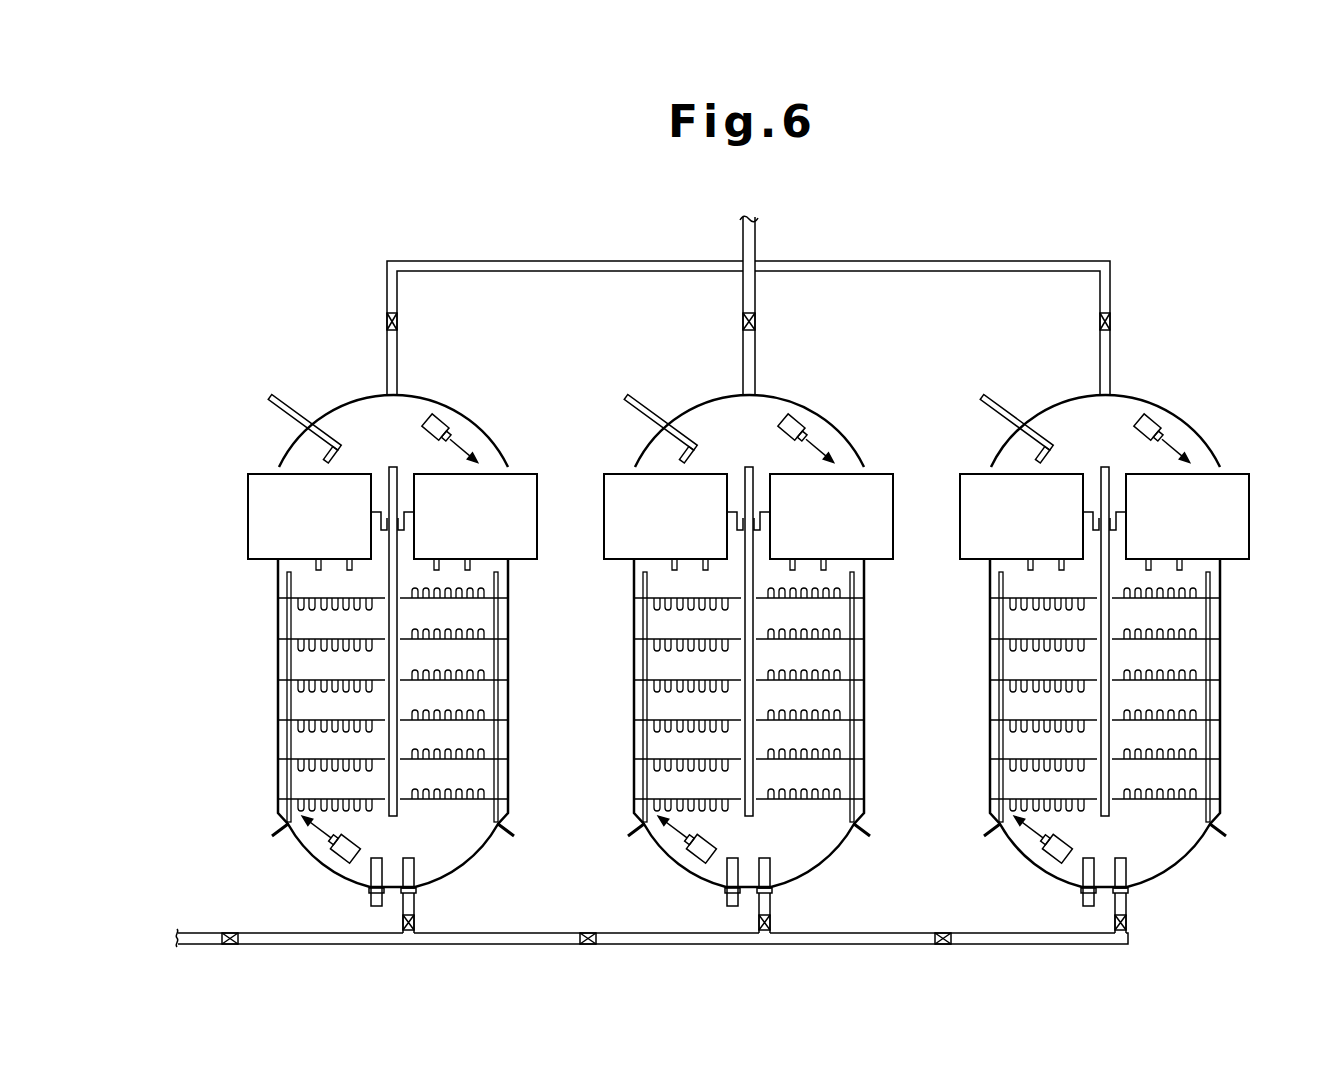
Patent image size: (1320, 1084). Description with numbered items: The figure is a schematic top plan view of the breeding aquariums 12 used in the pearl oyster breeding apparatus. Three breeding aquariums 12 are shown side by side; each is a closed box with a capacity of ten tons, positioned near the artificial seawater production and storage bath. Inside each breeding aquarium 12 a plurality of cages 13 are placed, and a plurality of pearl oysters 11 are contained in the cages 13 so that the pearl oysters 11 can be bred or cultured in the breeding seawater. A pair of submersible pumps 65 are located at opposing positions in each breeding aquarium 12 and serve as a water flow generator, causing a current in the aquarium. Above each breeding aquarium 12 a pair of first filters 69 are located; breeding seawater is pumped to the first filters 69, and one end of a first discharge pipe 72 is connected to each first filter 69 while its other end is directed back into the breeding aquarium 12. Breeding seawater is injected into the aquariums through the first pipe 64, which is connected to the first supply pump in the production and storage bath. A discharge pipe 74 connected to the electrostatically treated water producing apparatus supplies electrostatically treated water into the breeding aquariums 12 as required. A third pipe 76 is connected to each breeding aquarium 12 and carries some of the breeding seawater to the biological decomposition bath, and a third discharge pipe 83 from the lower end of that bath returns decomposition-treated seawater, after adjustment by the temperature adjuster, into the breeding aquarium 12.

The pearl oyster 11 is at (1234, 701).
The breeding aquarium 12 is at (990, 740).
The cage 13 is at (1000, 657).
The first pipe 64 is at (1083, 899).
The submersible pump 65 is at (1049, 865).
The first filter 69 is at (1269, 496).
The first discharge pipe 72 is at (1107, 495).
The discharge pipe 74 is at (876, 932).
The third pipe 76 is at (808, 261).
The third discharge pipe 83 is at (1008, 408).